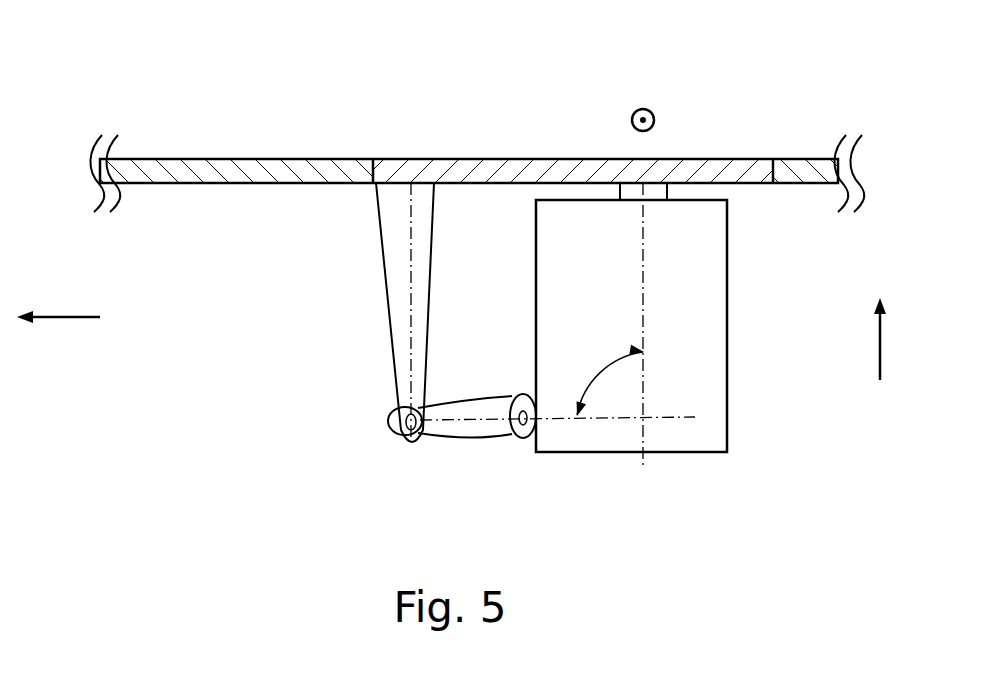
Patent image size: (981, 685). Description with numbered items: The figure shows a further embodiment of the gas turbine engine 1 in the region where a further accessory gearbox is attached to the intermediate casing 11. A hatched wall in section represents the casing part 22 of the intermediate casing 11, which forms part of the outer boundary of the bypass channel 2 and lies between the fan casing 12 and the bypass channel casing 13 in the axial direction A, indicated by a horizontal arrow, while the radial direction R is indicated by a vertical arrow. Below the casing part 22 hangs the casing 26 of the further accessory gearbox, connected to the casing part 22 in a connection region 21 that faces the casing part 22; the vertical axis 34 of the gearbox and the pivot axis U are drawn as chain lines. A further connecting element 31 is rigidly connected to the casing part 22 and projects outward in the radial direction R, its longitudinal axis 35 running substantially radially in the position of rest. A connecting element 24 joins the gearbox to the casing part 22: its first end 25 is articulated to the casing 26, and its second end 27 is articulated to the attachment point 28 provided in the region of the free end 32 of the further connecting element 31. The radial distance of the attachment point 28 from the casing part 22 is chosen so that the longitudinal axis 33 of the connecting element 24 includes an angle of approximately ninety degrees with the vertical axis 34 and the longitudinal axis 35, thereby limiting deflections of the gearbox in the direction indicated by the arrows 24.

The gas turbine engine 1 is at (84, 100).
The bypass channel 2 is at (282, 142).
The fan casing 12 is at (229, 128).
The casing part 22 is at (400, 158).
The intermediate casing 11 is at (572, 124).
The connection region 21 is at (659, 146).
The bypass channel casing 13 is at (804, 119).
The pivot axis U is at (643, 108).
The casing 26 is at (727, 342).
The vertical axis 34 is at (645, 244).
The further connecting element 31 is at (362, 364).
The longitudinal axis 35 is at (410, 192).
The free end 32 is at (411, 448).
The longitudinal axis 33 is at (422, 461).
The second end 27 is at (390, 416).
The attachment point 28 is at (396, 424).
The first end 25 is at (522, 438).
The connecting element 24 is at (586, 492).
The axial direction A is at (67, 315).
The radial direction R is at (881, 338).